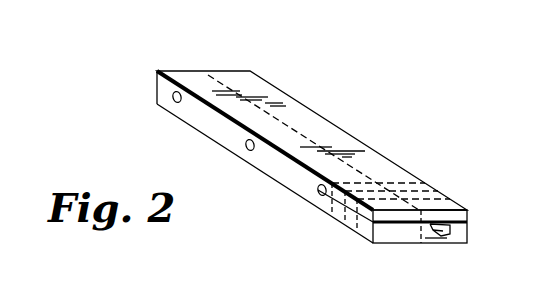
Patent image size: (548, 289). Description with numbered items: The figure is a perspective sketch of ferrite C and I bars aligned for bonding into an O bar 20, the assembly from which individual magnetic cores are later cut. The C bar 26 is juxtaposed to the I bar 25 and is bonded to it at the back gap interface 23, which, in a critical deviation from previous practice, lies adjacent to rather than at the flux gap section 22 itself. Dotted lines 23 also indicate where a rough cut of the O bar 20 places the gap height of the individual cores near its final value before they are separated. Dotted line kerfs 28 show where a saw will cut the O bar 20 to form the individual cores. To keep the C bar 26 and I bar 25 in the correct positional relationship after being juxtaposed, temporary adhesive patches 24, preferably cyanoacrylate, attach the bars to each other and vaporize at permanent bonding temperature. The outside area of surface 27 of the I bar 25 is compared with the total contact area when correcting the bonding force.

The O bar 20 is at (305, 77).
The flux gap section 22 is at (430, 224).
The dotted lines 23 is at (305, 137).
The temporary adhesive patches 24 is at (172, 97).
The I bar 25 is at (462, 212).
The C bar 26 is at (437, 238).
The surface 27 is at (234, 78).
The kerfs 28 is at (398, 181).